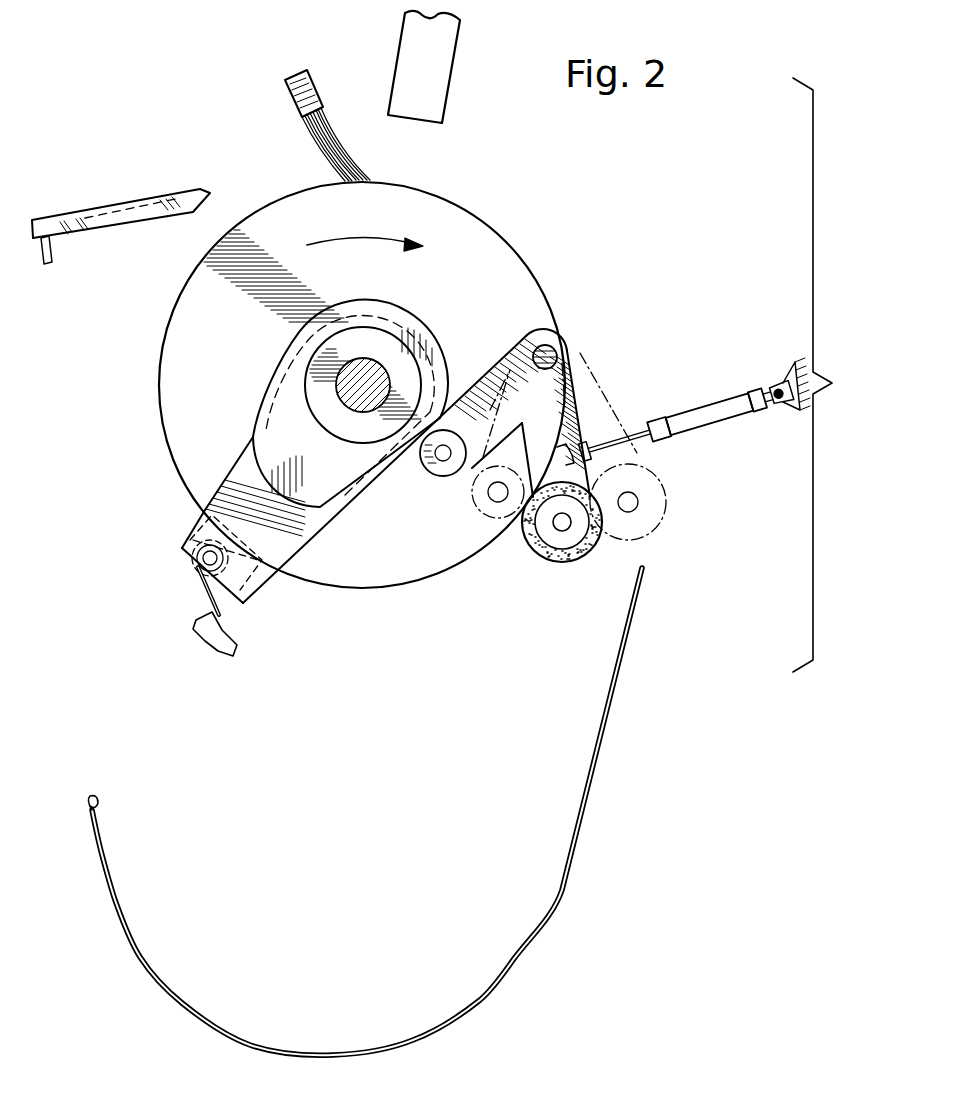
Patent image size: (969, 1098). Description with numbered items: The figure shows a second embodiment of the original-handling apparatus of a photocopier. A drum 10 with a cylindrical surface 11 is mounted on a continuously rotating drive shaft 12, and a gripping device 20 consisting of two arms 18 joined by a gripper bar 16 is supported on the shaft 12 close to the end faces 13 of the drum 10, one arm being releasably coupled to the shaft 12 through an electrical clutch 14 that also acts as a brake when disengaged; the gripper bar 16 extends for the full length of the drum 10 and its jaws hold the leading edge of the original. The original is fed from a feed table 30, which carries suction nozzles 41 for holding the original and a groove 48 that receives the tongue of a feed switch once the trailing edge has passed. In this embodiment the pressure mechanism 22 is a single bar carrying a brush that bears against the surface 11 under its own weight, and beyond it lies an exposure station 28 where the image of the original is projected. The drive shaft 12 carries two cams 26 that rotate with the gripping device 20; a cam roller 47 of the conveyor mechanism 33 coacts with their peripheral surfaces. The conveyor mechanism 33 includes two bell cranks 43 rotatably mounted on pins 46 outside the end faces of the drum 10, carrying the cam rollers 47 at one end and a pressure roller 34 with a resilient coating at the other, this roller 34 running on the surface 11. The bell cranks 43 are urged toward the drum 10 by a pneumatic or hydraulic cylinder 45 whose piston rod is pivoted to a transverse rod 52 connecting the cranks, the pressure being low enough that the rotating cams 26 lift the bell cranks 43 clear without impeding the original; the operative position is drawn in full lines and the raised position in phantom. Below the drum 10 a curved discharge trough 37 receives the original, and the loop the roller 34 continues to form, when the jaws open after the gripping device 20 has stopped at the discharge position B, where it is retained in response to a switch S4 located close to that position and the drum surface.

The drum 10 is at (148, 396).
The cylindrical surface 11 is at (510, 226).
The drive shaft 12 is at (347, 404).
The end faces 13 is at (527, 290).
The electrical clutch 14 is at (342, 432).
The gripper bar 16 is at (185, 532).
The arms 18 is at (232, 484).
The gripping device 20 is at (332, 502).
The pressure mechanism 22 is at (352, 166).
The cams 26 is at (272, 388).
The exposure station 28 is at (408, 54).
The feed table 30 is at (103, 224).
The conveyor mechanism 33 is at (580, 404).
The pressure roller 34 is at (553, 562).
The curved discharge trough 37 is at (610, 712).
The nozzles 41 is at (52, 256).
The bell cranks 43 is at (497, 378).
The pneumatic or hydraulic cylinder 45 is at (704, 418).
The pins 46 is at (556, 348).
The cam roller 47 is at (445, 472).
The groove 48 is at (131, 206).
The transverse rod 52 is at (558, 438).
The discharge position B is at (287, 597).
The switch S4 is at (226, 657).